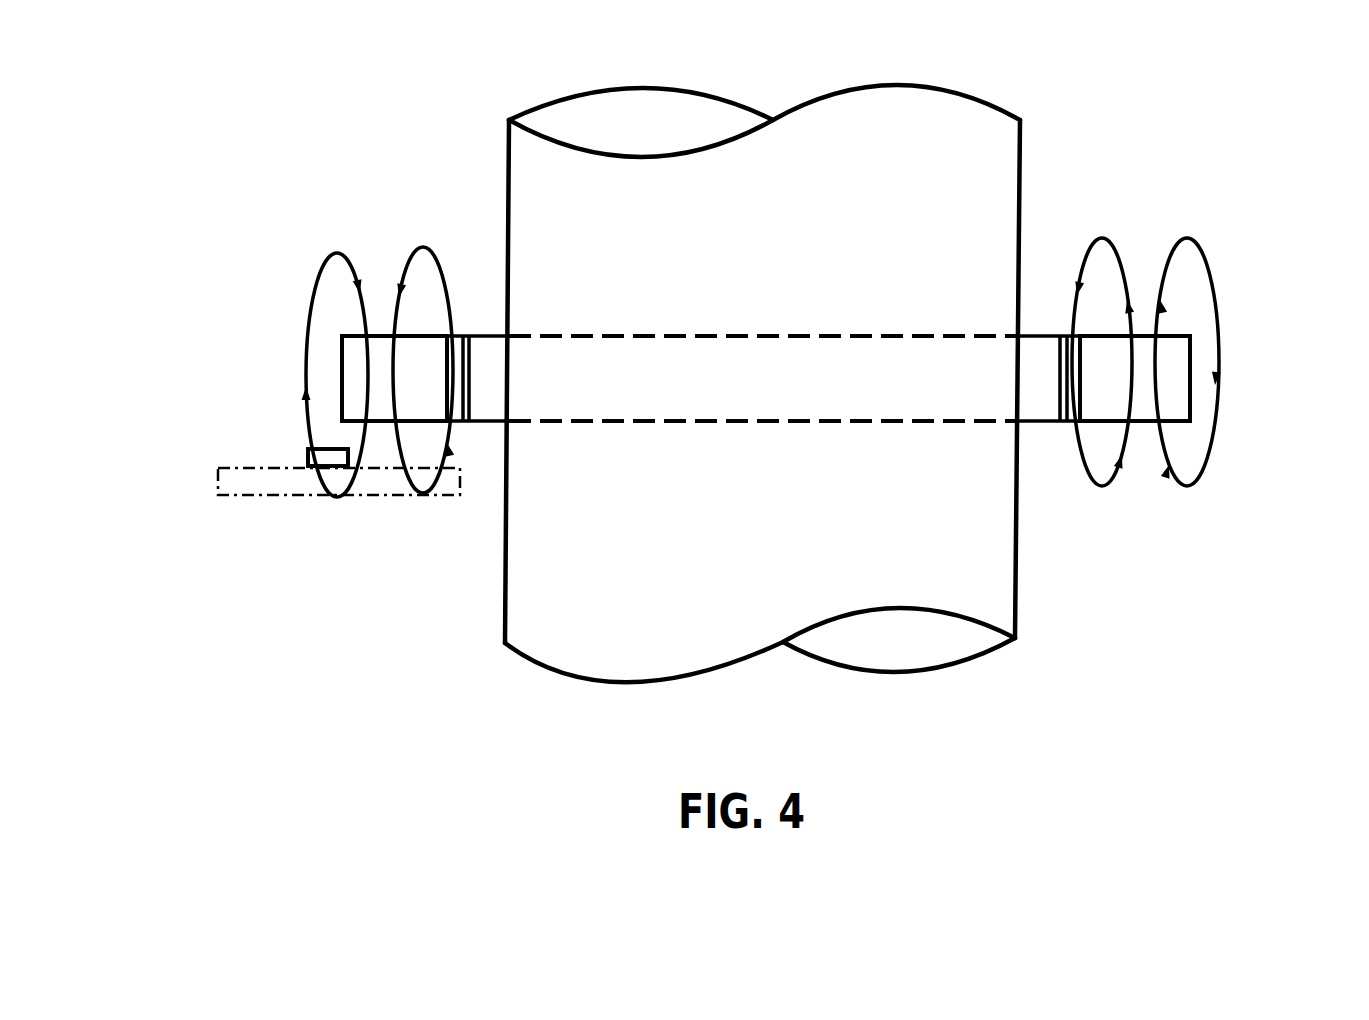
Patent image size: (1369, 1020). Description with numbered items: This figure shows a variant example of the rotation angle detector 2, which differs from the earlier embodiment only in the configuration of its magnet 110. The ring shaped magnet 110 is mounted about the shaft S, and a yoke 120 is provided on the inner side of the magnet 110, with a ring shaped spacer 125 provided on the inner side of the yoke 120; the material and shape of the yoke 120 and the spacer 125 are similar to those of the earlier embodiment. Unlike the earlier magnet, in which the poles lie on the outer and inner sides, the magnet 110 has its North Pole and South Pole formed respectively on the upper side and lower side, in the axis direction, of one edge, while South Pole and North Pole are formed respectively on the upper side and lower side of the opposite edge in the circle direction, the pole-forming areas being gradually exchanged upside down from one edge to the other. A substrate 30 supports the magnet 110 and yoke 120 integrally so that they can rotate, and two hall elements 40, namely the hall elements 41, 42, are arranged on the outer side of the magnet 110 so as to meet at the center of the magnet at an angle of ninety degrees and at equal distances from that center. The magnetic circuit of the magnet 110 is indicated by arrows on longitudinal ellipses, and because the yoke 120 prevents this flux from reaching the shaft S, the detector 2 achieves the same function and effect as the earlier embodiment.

The rotation angle detector 2 is at (1174, 221).
The shaft S is at (988, 182).
The substrate 30 is at (257, 468).
The hall elements 40 is at (313, 470).
The hall element 41 is at (328, 457).
The hall element 42 is at (328, 457).
The magnet 110 is at (383, 334).
The yoke 120 is at (418, 248).
The ring shaped spacer 125 is at (488, 412).